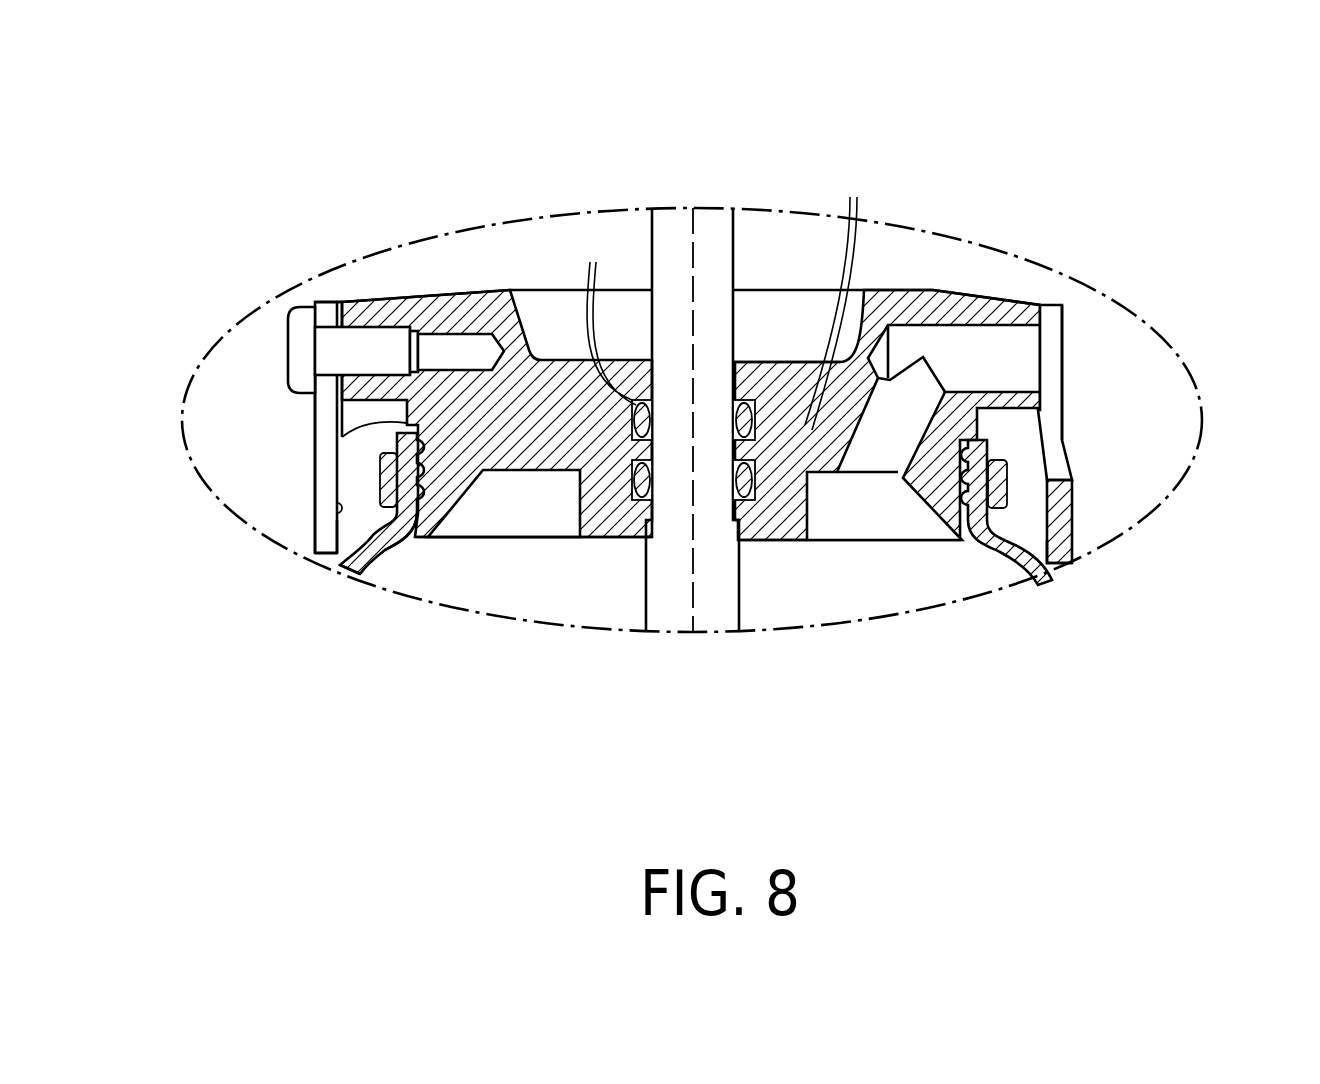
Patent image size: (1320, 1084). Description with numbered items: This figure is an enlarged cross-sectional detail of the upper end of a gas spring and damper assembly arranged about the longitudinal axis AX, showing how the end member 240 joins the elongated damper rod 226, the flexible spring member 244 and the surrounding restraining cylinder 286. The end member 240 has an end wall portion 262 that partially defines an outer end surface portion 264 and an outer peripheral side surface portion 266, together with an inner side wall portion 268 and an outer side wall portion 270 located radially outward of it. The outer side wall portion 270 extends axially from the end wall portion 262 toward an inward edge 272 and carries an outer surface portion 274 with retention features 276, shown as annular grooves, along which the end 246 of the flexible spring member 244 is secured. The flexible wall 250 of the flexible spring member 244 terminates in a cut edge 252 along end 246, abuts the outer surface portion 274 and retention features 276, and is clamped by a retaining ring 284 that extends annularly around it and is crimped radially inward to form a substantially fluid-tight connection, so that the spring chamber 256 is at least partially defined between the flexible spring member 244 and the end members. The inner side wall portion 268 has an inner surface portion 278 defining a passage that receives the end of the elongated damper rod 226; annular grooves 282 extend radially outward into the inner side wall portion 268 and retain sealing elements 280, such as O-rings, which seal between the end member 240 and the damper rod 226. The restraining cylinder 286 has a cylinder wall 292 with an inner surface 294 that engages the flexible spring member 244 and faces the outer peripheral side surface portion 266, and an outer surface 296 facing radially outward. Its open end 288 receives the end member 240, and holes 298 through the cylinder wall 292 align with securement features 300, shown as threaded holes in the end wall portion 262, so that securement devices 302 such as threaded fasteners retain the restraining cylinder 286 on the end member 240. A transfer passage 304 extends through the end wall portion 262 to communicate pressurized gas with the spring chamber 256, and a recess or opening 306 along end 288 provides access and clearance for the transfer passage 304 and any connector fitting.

The elongated damper rod 226 is at (722, 603).
The end member 240 is at (938, 288).
The flexible spring member 244 is at (347, 538).
The end of flexible spring member 246 is at (381, 560).
The flexible wall 250 is at (342, 563).
The cut edge 252 is at (343, 435).
The spring chamber 256 is at (816, 602).
The end wall portion 262 is at (487, 317).
The outer end surface portion 264 is at (553, 290).
The outer peripheral side surface portion 266 is at (363, 300).
The inner side wall portion 268 is at (777, 477).
The outer side wall portion 270 is at (457, 467).
The inward edge 272 is at (465, 540).
The outer surface portion 274 is at (327, 413).
The retention features 276 is at (956, 490).
The inner surface portion 278 is at (745, 362).
The sealing elements 280 is at (840, 295).
The annular grooves 282 is at (603, 316).
The retaining ring 284 is at (380, 480).
The restraining cylinder 286 is at (1085, 497).
The open end 288 is at (1112, 332).
The cylinder wall 292 is at (1060, 540).
The inner surface 294 is at (332, 537).
The outer surface 296 is at (316, 460).
The holes 298 is at (327, 307).
The securement features 300 is at (445, 325).
The securement devices 302 is at (298, 347).
The transfer passage 304 is at (992, 330).
The recess or opening 306 is at (1080, 372).
The longitudinal axis AX is at (693, 587).